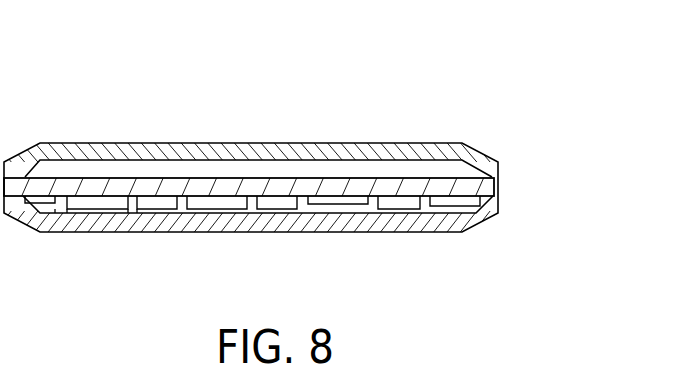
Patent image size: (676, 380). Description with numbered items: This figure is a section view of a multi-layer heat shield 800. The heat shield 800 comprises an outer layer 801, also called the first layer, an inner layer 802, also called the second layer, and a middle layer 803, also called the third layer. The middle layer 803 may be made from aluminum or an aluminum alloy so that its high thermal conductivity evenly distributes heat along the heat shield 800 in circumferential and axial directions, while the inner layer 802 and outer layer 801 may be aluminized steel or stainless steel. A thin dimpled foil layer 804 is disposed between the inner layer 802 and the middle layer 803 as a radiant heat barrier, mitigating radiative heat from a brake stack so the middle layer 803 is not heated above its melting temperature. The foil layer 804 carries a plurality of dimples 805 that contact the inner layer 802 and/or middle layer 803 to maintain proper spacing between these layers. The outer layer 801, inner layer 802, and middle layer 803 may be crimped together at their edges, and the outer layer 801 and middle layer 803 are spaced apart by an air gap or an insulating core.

The heat shield 800 is at (99, 103).
The outer layer 801 is at (460, 148).
The inner layer 802 is at (462, 226).
The middle layer 803 is at (491, 188).
The dimpled foil layer 804 is at (402, 205).
The dimples 805 is at (68, 214).